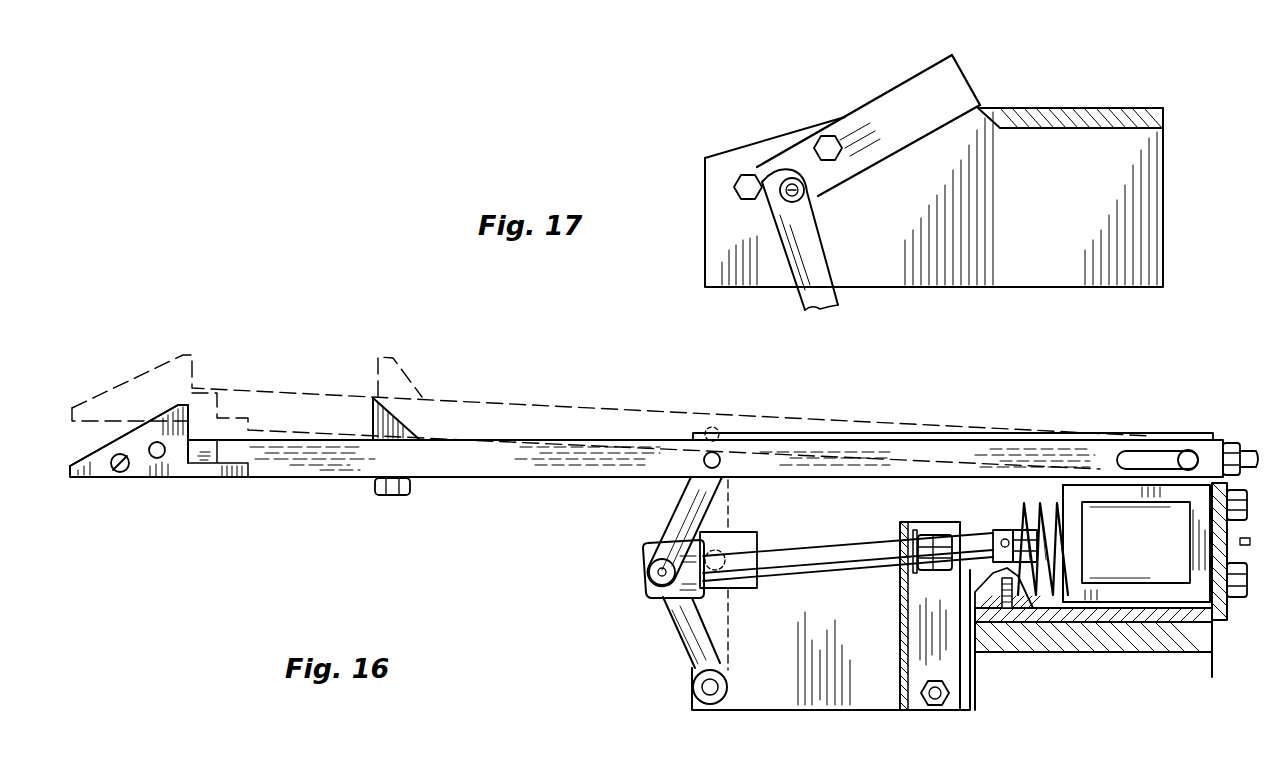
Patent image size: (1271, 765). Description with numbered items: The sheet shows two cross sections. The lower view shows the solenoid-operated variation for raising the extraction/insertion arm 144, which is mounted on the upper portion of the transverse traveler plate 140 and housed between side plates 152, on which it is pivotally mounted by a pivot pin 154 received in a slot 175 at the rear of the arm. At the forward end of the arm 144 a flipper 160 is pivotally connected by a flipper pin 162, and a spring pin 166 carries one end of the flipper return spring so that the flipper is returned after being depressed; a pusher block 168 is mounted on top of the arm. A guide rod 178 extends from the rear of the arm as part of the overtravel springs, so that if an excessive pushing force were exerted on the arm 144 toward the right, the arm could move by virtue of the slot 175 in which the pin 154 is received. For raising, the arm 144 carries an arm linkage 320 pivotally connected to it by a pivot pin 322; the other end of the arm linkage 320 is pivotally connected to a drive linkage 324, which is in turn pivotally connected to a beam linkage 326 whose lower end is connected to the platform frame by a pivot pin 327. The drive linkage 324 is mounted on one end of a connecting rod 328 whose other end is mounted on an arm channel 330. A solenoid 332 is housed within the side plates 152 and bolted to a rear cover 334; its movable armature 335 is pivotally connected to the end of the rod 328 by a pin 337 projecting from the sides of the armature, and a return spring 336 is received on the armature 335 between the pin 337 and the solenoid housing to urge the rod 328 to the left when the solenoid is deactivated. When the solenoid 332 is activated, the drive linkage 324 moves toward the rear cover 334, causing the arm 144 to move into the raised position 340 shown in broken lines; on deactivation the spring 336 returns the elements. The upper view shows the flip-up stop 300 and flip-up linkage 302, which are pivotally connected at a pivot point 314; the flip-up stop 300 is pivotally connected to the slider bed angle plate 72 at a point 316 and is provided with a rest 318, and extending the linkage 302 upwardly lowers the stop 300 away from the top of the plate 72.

In FIG. 17, the slider bed angle plate 72 is at (940, 278).
In FIG. 17, the flip-up stop 300 is at (893, 92).
In FIG. 17, the flip-up linkage 302 is at (808, 294).
In FIG. 17, the pivot point 314 is at (806, 193).
In FIG. 17, the point 316 is at (826, 136).
In FIG. 17, the rest 318 is at (738, 186).
In FIG. 16, the traveler plate 140 is at (1092, 652).
In FIG. 16, the extraction/insertion arm 144 is at (535, 478).
In FIG. 16, the side plate 152 is at (973, 437).
In FIG. 16, the pivot pin 154 is at (1186, 450).
In FIG. 16, the flipper 160 is at (132, 443).
In FIG. 16, the flipper pin 162 is at (165, 458).
In FIG. 16, the spring pin 166 is at (113, 473).
In FIG. 16, the pusher block 168 is at (409, 424).
In FIG. 16, the slot 175 is at (1145, 452).
In FIG. 16, the guide rod 178 is at (1250, 450).
In FIG. 16, the arm linkage 320 is at (680, 500).
In FIG. 16, the pivot pin 322 is at (722, 462).
In FIG. 16, the drive linkage 324 is at (653, 592).
In FIG. 16, the beam linkage 326 is at (683, 645).
In FIG. 16, the pivot pin 327 is at (710, 692).
In FIG. 16, the connecting rod 328 is at (817, 570).
In FIG. 16, the arm channel 330 is at (948, 665).
In FIG. 16, the solenoid 332 is at (1165, 575).
In FIG. 16, the rear cover 334 is at (1227, 608).
In FIG. 16, the movable armature 335 is at (1047, 542).
In FIG. 16, the return spring 336 is at (1022, 520).
In FIG. 16, the pin 337 is at (993, 532).
In FIG. 16, the raised position 340 is at (270, 395).